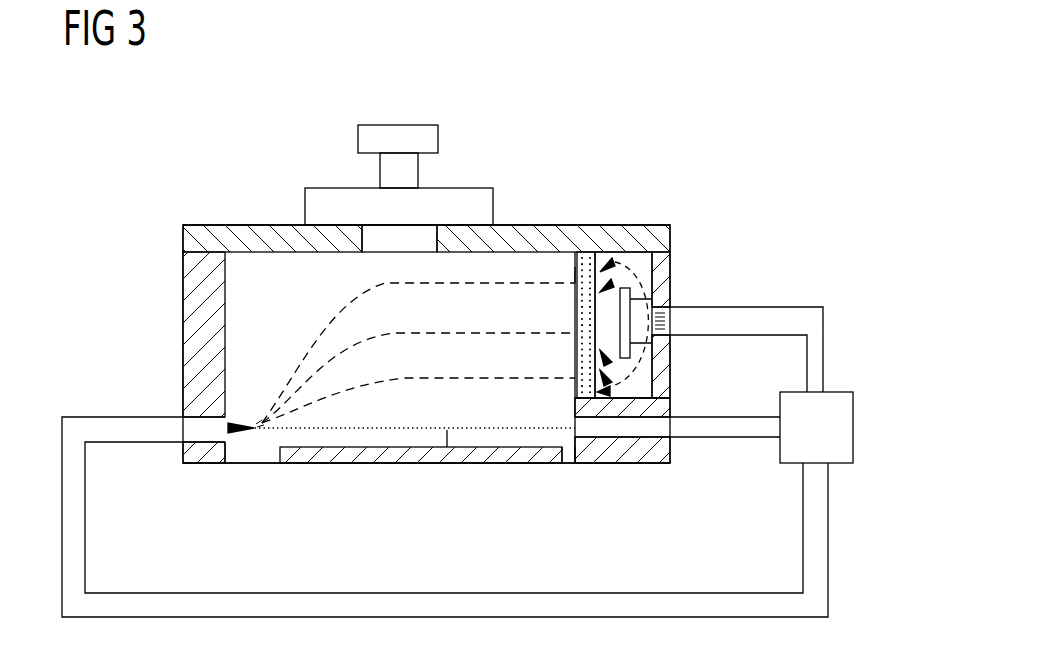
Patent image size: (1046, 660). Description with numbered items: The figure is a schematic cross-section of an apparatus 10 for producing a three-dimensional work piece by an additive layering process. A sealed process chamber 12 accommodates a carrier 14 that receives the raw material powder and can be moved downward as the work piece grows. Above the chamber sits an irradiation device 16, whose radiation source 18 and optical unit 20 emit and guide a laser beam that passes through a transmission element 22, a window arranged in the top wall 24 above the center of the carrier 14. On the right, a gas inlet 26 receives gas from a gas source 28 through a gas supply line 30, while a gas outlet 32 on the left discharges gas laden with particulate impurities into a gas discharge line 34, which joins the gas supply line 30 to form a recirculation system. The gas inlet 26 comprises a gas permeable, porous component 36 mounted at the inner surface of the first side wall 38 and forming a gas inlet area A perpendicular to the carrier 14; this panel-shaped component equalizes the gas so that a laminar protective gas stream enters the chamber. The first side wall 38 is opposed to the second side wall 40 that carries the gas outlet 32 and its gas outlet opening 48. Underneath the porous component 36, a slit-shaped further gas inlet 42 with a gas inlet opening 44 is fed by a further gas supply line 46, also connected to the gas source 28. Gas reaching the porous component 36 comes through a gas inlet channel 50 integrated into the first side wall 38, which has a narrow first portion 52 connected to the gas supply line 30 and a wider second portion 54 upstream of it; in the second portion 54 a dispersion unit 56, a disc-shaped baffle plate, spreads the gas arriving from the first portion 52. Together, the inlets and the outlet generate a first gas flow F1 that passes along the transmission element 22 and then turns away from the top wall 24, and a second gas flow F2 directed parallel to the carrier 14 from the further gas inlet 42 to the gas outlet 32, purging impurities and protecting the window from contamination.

The apparatus 10 is at (172, 146).
The process chamber 12 is at (490, 277).
The carrier 14 is at (395, 463).
The irradiation device 16 is at (302, 163).
The radiation source 18 is at (410, 140).
The optical unit 20 is at (410, 170).
The transmission element 22 is at (415, 258).
The top wall 24 is at (532, 226).
The gas inlet 26 is at (650, 390).
The gas source 28 is at (838, 400).
The gas supply line 30 is at (774, 326).
The gas outlet 32 is at (230, 463).
The gas discharge line 34 is at (104, 430).
The gas permeable, porous component 36 is at (588, 255).
The first side wall 38 is at (676, 410).
The second side wall 40 is at (183, 308).
The further gas inlet 42 is at (573, 450).
The gas inlet opening 44 is at (578, 433).
The further gas supply line 46 is at (708, 427).
The gas outlet opening 48 is at (216, 432).
The gas inlet channel 50 is at (676, 264).
The first portion 52 is at (665, 310).
The second portion 54 is at (628, 266).
The dispersion unit 56 is at (622, 318).
The gas inlet area A is at (575, 267).
The first gas flow F1 is at (333, 326).
The second gas flow F2 is at (447, 430).